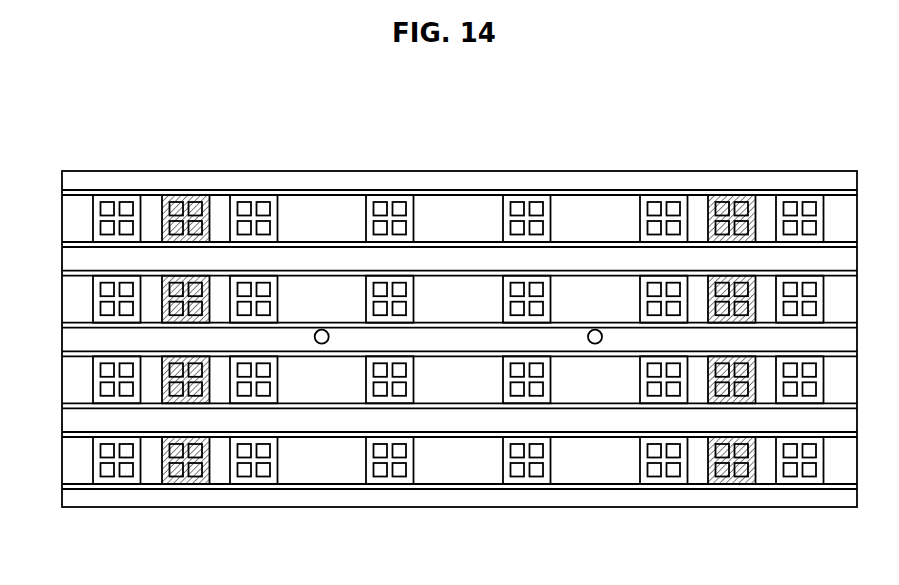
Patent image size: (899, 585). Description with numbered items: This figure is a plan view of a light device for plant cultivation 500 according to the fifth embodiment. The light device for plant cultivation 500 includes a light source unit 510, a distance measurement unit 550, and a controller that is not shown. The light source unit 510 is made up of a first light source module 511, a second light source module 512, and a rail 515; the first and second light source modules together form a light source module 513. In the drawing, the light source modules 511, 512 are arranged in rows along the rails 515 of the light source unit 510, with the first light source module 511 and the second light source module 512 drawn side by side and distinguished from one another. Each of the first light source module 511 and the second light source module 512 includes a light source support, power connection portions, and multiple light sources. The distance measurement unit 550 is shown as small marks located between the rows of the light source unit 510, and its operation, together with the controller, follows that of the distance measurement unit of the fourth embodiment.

The light device for plant cultivation 500 is at (30, 107).
The light source unit 510 is at (604, 178).
The first light source module 511 is at (658, 195).
The second light source module 512 is at (730, 195).
The light source module 513 is at (660, 113).
The rail 515 is at (798, 188).
The distance measurement unit 550 is at (595, 344).